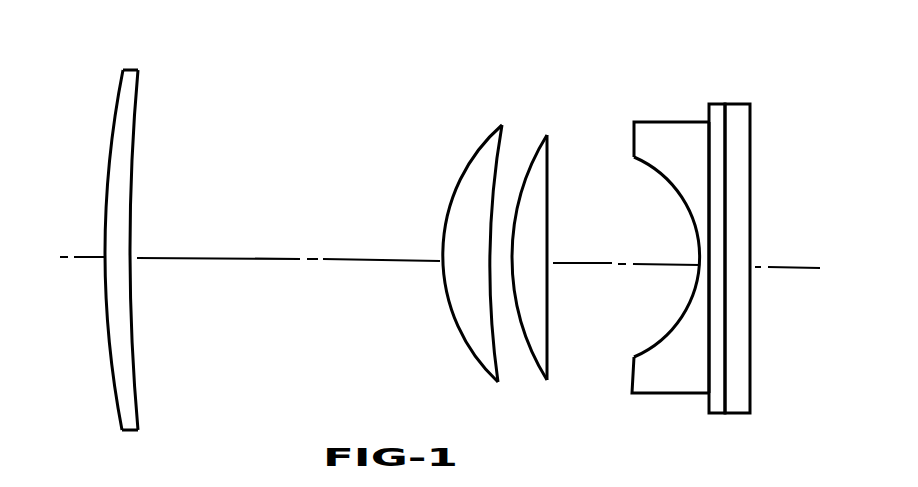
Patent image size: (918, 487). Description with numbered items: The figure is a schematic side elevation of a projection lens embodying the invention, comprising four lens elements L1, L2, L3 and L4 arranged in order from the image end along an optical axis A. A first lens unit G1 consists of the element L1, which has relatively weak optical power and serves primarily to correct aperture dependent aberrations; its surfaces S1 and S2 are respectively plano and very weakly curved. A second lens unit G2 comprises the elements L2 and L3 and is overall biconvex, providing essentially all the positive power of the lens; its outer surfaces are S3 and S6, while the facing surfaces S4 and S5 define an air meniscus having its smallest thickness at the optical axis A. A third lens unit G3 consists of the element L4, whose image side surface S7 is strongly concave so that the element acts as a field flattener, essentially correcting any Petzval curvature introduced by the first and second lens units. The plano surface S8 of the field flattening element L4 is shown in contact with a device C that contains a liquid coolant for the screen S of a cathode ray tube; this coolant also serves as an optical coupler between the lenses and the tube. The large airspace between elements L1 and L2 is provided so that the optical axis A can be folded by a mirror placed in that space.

The first lens unit G1 is at (95, 52).
The second lens unit G2 is at (465, 58).
The third lens unit G3 is at (637, 60).
The lens element L1 is at (138, 70).
The lens element L2 is at (477, 144).
The lens element L3 is at (547, 135).
The field flattening element L4 is at (661, 122).
The lens surface S1 is at (110, 336).
The lens surface S2 is at (135, 395).
The lens surface S3 is at (456, 322).
The lens surface S4 is at (494, 358).
The lens surface S5 is at (530, 356).
The lens surface S6 is at (548, 322).
The lens surface S7 is at (677, 323).
The lens surface S8 is at (703, 372).
The device C is at (720, 104).
The screen S is at (744, 108).
The optical axis A is at (791, 267).